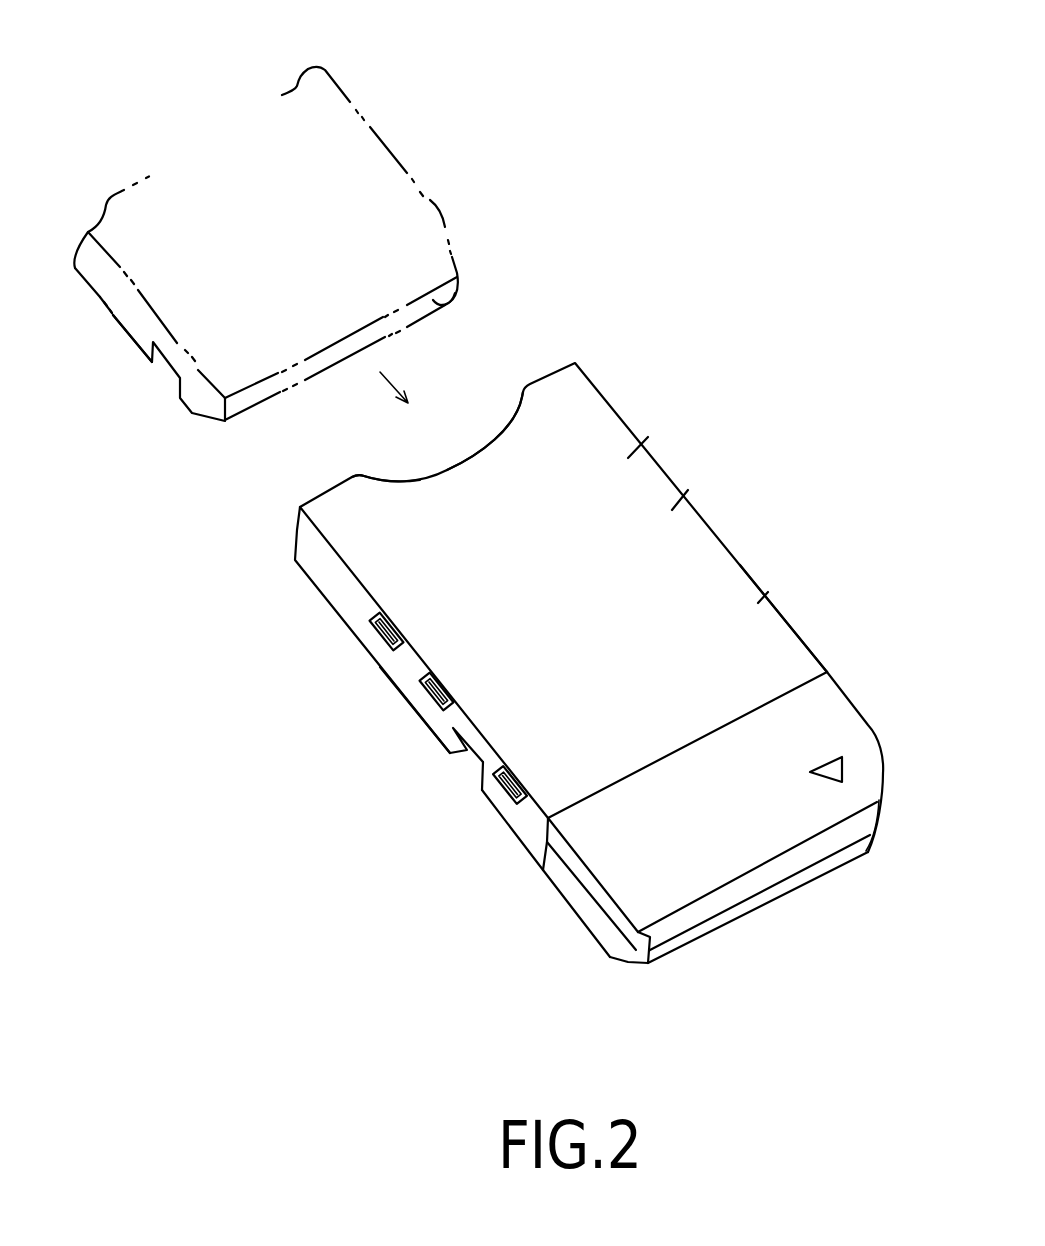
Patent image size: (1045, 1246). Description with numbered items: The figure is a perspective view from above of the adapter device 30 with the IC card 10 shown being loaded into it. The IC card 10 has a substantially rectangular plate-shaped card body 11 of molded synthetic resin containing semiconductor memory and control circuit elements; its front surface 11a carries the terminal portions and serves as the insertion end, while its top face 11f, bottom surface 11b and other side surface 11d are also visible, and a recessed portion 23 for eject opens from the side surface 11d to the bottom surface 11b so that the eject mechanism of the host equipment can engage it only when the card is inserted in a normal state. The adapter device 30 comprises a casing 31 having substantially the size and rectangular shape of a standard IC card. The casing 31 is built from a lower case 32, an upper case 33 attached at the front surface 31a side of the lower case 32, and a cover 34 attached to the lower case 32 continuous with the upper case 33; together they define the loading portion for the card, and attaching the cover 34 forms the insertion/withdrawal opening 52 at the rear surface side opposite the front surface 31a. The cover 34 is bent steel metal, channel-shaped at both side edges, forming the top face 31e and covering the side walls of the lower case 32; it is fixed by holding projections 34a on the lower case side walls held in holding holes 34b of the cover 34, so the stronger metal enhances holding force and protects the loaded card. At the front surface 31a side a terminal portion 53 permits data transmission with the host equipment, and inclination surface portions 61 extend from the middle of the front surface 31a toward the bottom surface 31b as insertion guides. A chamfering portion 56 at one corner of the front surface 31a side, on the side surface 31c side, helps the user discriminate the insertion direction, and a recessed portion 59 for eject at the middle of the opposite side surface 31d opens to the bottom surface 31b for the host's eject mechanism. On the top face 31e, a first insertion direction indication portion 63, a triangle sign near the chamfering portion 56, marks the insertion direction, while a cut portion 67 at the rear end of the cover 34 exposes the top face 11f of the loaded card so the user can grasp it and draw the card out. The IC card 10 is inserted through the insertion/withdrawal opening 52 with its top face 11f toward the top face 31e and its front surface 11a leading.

The IC card 10 is at (363, 74).
The card body 11 is at (393, 172).
The front surface 11a is at (460, 313).
The bottom surface 11b is at (108, 310).
The other side surface 11d is at (140, 330).
The top face 11f is at (443, 188).
The recessed portion for eject 23 is at (158, 363).
The adapter device 30 is at (760, 527).
The casing 31 is at (483, 803).
The front surface 31a is at (713, 933).
The bottom surface 31b is at (557, 890).
The side surface 31c is at (763, 597).
The side surface 31d is at (420, 705).
The top face 31e is at (680, 500).
The lower case 32 is at (518, 835).
The upper case 33 is at (833, 693).
The cover 34 is at (638, 447).
The holding projections 34a is at (385, 638).
The holding holes 34b is at (383, 620).
The insertion/withdrawal opening 52 is at (417, 477).
The terminal portion 53 is at (784, 915).
The chamfering portion 56 is at (883, 770).
The recessed portion for eject 59 is at (463, 753).
The inclination surface portions 61 is at (640, 960).
The first insertion direction indication portion 63 is at (840, 757).
The cut portion 67 is at (500, 443).